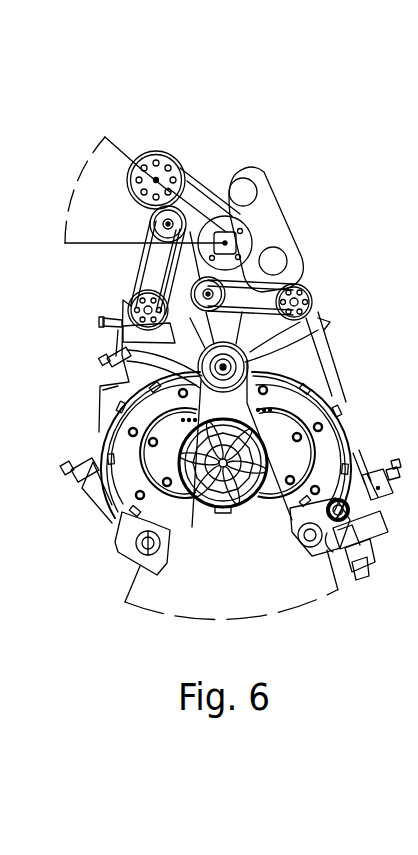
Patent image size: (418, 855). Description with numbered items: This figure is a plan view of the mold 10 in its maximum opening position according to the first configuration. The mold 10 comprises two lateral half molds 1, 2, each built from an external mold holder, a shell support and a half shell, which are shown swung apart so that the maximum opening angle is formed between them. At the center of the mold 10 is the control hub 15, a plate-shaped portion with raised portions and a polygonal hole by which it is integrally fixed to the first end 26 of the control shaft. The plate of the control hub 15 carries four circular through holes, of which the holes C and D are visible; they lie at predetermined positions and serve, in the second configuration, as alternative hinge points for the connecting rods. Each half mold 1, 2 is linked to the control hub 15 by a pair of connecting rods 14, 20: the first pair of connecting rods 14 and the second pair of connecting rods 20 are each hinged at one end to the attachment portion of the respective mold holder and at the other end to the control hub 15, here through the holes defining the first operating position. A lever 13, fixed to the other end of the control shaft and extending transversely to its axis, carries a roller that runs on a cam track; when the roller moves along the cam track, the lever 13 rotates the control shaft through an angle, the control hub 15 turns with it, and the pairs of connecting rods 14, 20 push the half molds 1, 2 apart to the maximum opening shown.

The mold 10 is at (110, 96).
The lateral half mold 1 is at (88, 436).
The lateral half mold 2 is at (354, 393).
The lever 13 is at (198, 180).
The first pair of connecting rods 14 is at (152, 273).
The control hub 15 is at (262, 225).
The second pair of connecting rods 20 is at (253, 295).
The first end of the control shaft 26 is at (225, 240).
The circular through hole C is at (274, 261).
The circular through hole D is at (243, 192).